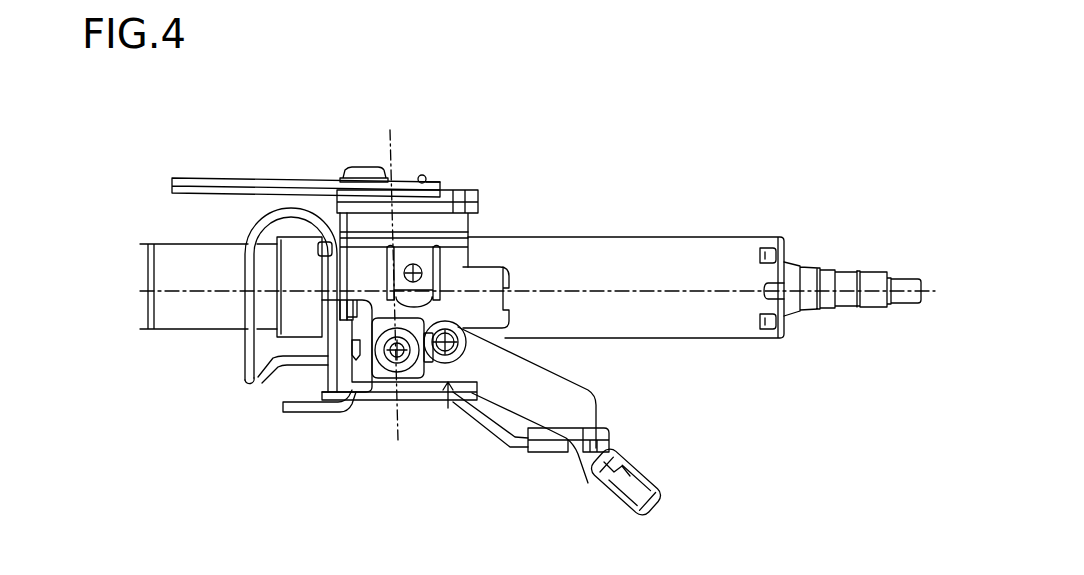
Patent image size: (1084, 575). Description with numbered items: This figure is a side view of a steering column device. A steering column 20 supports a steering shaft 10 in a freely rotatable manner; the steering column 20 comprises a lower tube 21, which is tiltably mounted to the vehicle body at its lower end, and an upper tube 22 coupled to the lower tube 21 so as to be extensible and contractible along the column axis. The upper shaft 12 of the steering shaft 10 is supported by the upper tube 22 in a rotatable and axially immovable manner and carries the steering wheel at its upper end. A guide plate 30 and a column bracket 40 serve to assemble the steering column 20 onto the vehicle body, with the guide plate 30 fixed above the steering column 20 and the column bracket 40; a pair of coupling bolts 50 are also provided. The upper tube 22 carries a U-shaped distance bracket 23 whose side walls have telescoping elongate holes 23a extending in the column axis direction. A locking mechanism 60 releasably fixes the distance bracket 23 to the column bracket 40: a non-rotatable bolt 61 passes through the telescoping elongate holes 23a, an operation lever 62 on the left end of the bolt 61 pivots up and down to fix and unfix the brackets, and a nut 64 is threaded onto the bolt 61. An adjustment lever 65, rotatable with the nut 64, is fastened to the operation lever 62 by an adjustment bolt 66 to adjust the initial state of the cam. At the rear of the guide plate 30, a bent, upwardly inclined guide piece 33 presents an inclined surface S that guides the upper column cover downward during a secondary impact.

The steering shaft 10 is at (811, 259).
The upper shaft 12 is at (873, 280).
The steering column 20 is at (577, 233).
The lower tube 21 is at (169, 332).
The upper tube 22 is at (705, 330).
The distance bracket 23 is at (333, 372).
The telescoping elongate hole 23a is at (352, 394).
The guide plate 30 is at (227, 178).
The guide piece 33 is at (420, 174).
The inclined surface S is at (428, 178).
The column bracket 40 is at (465, 188).
The coupling bolt 50 is at (358, 167).
The locking mechanism 60 is at (450, 410).
The bolt 61 is at (405, 374).
The operation lever 62 is at (563, 390).
The nut 64 is at (391, 372).
The adjustment lever 65 is at (429, 372).
The adjustment bolt 66 is at (460, 345).